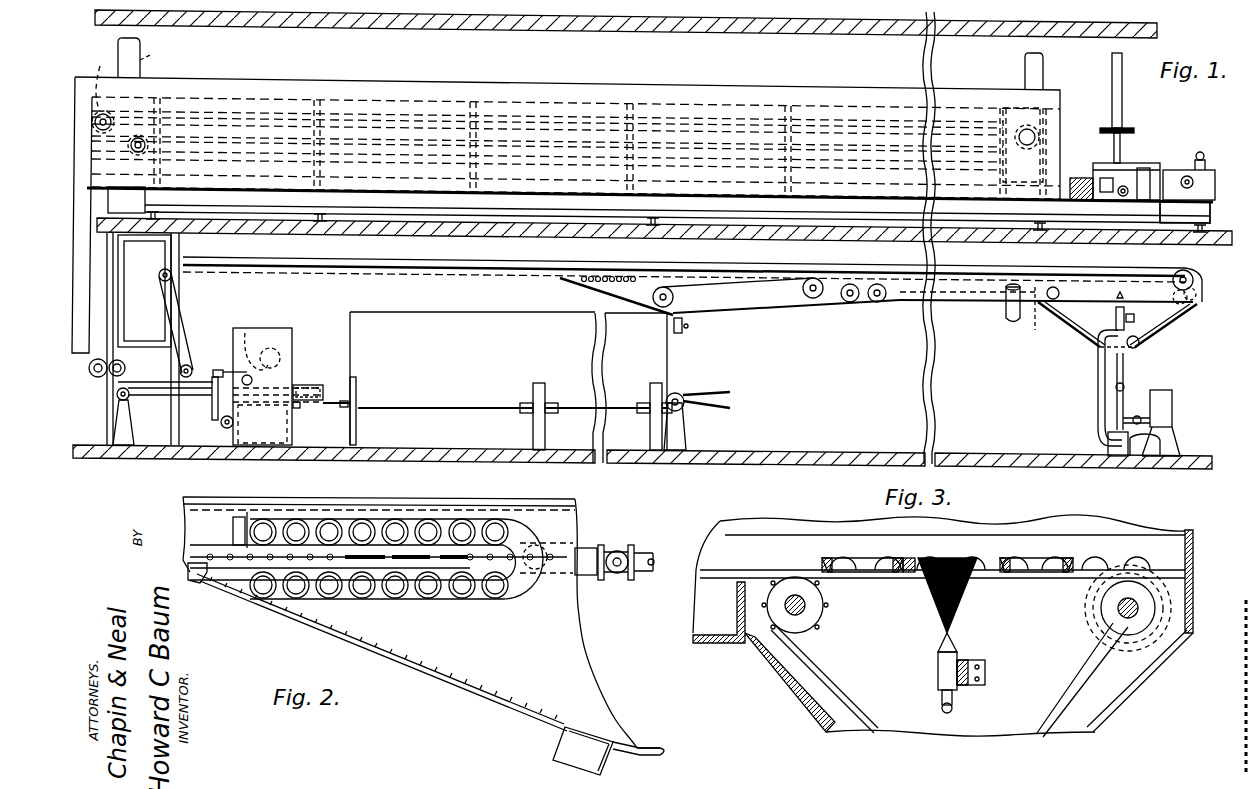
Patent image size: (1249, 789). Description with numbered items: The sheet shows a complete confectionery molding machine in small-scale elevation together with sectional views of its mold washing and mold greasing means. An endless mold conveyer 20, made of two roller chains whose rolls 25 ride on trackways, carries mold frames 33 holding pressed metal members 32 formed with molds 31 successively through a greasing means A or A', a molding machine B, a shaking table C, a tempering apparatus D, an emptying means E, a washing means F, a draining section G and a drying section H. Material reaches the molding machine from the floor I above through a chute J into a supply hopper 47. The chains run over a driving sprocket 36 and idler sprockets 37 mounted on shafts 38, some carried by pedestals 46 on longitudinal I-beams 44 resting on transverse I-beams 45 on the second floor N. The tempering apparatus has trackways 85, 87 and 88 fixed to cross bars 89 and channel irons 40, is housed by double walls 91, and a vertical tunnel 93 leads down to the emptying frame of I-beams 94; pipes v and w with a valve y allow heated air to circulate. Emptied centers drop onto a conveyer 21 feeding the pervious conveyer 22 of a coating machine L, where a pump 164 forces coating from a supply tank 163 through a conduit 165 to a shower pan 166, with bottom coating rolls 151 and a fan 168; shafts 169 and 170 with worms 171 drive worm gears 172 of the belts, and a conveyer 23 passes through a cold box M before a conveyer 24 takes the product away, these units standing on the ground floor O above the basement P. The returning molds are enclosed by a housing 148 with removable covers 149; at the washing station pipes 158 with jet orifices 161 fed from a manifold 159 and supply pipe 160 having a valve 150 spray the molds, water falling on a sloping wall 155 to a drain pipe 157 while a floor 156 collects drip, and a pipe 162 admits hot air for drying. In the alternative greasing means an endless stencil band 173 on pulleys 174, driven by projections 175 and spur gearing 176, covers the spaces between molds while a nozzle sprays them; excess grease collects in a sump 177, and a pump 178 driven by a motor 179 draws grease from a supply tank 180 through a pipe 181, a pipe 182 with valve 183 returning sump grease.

In FIG. 1, the endless mold conveyer 20 is at (1178, 168).
In FIG. 2, the endless mold conveyer 20 is at (550, 552).
In FIG. 1, the conveyer 21 is at (216, 376).
In FIG. 1, the pervious conveyer 22 is at (272, 350).
In FIG. 1, the conveyer 23 is at (325, 385).
In FIG. 1, the conveyer 24 is at (705, 392).
In FIG. 3, the rolls 25 is at (846, 555).
In FIG. 2, the molds 31 is at (408, 600).
In FIG. 3, the molds 31 is at (860, 573).
In FIG. 3, the pressed metal member 32 is at (897, 573).
In FIG. 3, the hollow rectangular frame 33 is at (822, 560).
In FIG. 1, the driving sprocket 36 is at (1045, 120).
In FIG. 1, the idler sprockets 37 is at (131, 147).
In FIG. 3, the idler sprockets 37 is at (1080, 535).
In FIG. 1, the shafts 38 is at (150, 290).
In FIG. 1, the channel irons 40 is at (166, 177).
In FIG. 1, the I-beams 44 is at (534, 200).
In FIG. 1, the transverse I-beams 45 is at (155, 208).
In FIG. 1, the pedestals 46 is at (1210, 210).
In FIG. 1, the supply hopper 47 is at (1108, 130).
In FIG. 1, the trackways 85 is at (479, 80).
In FIG. 1, the trackways 87 is at (386, 80).
In FIG. 1, the trackways 88 is at (250, 80).
In FIG. 1, the angle iron cross bars 89 is at (775, 112).
In FIG. 1, the double walls 91 is at (735, 80).
In FIG. 1, the vertical tunnel 93 is at (100, 315).
In FIG. 1, the vertical I-beams 94 is at (170, 422).
In FIG. 1, the housing 148 is at (430, 266).
In FIG. 2, the housing 148 is at (586, 630).
In FIG. 3, the housing 148 is at (710, 645).
In FIG. 1, the removable top wall sections 149 is at (258, 262).
In FIG. 2, the removable top wall sections 149 is at (275, 497).
In FIG. 2, the valve 150 is at (642, 548).
In FIG. 1, the bottom coating rolls 151 is at (252, 410).
In FIG. 1, the lower wall 155 is at (592, 296).
In FIG. 2, the lower wall 155 is at (205, 594).
In FIG. 1, the floor 156 is at (760, 313).
In FIG. 2, the floor 156 is at (655, 748).
In FIG. 1, the drain pipe 157 is at (688, 327).
In FIG. 2, the drain pipe 157 is at (565, 745).
In FIG. 2, the pipes 158 is at (410, 519).
In FIG. 2, the manifold 159 is at (525, 600).
In FIG. 2, the supply pipe 160 is at (585, 578).
In FIG. 2, the jet orifices 161 is at (505, 519).
In FIG. 1, the pipe 162 is at (1013, 322).
In FIG. 1, the supply tank 163 is at (298, 436).
In FIG. 1, the pump 164 is at (246, 425).
In FIG. 1, the conduit 165 is at (220, 427).
In FIG. 1, the shower pan 166 is at (243, 332).
In FIG. 1, the fan 168 is at (286, 349).
In FIG. 1, the shaft 169 is at (212, 410).
In FIG. 1, the shaft 170 is at (335, 410).
In FIG. 1, the worm 171 is at (114, 430).
In FIG. 1, the worm gear 172 is at (118, 397).
In FIG. 1, the endless stencil band 173 is at (1075, 340).
In FIG. 3, the endless stencil band 173 is at (830, 668).
In FIG. 1, the pulleys 174 is at (1195, 312).
In FIG. 3, the pulleys 174 is at (815, 630).
In FIG. 3, the projections 175 is at (1105, 627).
In FIG. 1, the spur gearing 176 is at (1125, 311).
In FIG. 3, the spur gearing 176 is at (938, 667).
In FIG. 3, the sump 177 is at (1083, 631).
In FIG. 1, the pump 178 is at (1115, 458).
In FIG. 1, the electric motor 179 is at (1146, 458).
In FIG. 1, the supply tank 180 is at (1172, 405).
In FIG. 1, the pipe 181 is at (1130, 418).
In FIG. 1, the pipe 182 is at (1098, 405).
In FIG. 1, the valve 183 is at (1125, 387).
In FIG. 1, the mold greasing means A is at (1192, 158).
In FIG. 1, the alternative greasing apparatus A' is at (1185, 345).
In FIG. 3, the alternative greasing apparatus A' is at (1027, 640).
In FIG. 1, the molding machine B is at (1145, 146).
In FIG. 1, the shaking table C is at (1080, 162).
In FIG. 1, the tempering apparatus D is at (880, 76).
In FIG. 1, the mold emptying means E is at (163, 336).
In FIG. 1, the mold washing means F is at (619, 261).
In FIG. 2, the mold washing means F is at (362, 487).
In FIG. 1, the draining section G is at (755, 266).
In FIG. 1, the drying section H is at (983, 265).
In FIG. 1, the floor I is at (830, 36).
In FIG. 1, the chute J is at (1122, 80).
In FIG. 1, the coating machine L is at (262, 386).
In FIG. 1, the cold box M is at (508, 381).
In FIG. 1, the second floor N is at (548, 247).
In FIG. 1, the ground floor O is at (845, 450).
In FIG. 1, the basement P is at (765, 481).
In FIG. 1, the pipe v is at (142, 62).
In FIG. 1, the pipe w is at (1025, 70).
In FIG. 1, the valve y is at (152, 53).